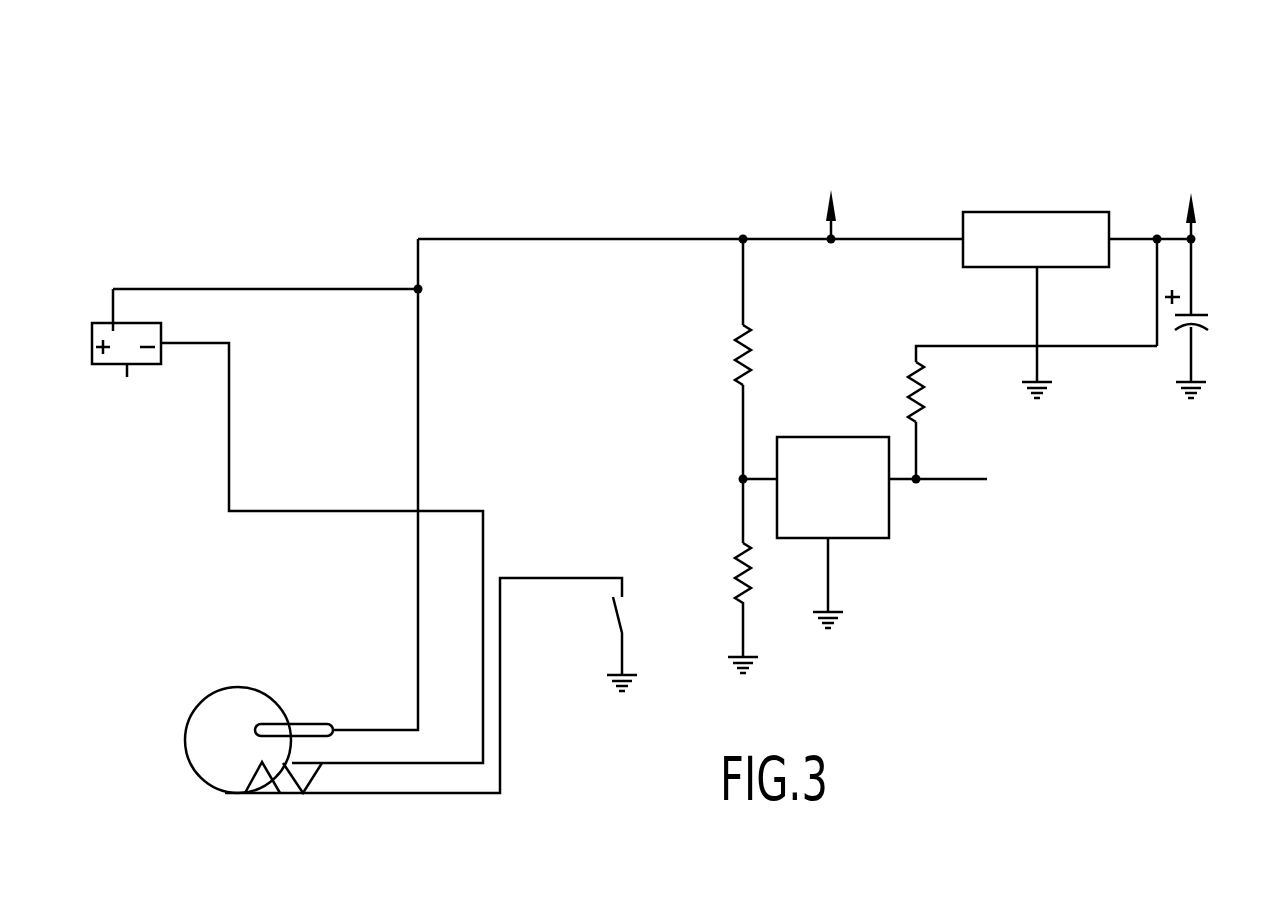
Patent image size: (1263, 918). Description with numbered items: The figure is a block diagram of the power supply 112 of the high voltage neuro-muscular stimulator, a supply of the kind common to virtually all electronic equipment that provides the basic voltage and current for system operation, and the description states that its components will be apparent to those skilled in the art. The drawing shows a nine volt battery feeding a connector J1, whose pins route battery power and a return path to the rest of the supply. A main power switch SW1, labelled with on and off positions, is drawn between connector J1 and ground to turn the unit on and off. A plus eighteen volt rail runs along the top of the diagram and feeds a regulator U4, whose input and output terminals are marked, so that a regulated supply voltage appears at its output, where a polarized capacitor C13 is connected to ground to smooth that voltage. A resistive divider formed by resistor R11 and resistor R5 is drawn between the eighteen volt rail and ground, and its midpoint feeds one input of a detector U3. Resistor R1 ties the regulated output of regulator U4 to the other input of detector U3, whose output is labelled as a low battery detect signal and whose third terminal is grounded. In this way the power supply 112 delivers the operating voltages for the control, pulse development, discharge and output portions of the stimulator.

The power supply 112 is at (1032, 142).
The power jack connector J1 is at (259, 759).
The main power switch SW1 is at (638, 644).
The resistor R11 is at (723, 355).
The resistor R5 is at (731, 608).
The resistor R1 is at (900, 392).
The low battery detector U3 is at (833, 471).
The voltage regulator U4 is at (1036, 223).
The capacitor C13 is at (1205, 306).